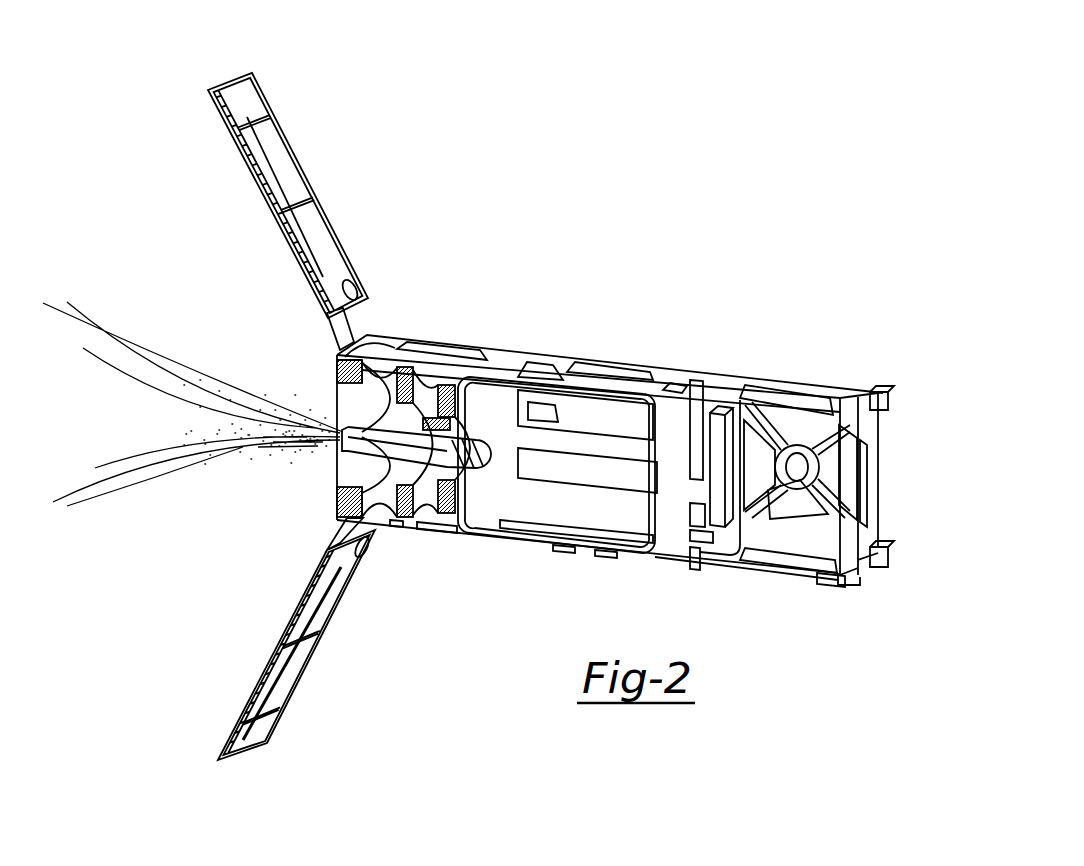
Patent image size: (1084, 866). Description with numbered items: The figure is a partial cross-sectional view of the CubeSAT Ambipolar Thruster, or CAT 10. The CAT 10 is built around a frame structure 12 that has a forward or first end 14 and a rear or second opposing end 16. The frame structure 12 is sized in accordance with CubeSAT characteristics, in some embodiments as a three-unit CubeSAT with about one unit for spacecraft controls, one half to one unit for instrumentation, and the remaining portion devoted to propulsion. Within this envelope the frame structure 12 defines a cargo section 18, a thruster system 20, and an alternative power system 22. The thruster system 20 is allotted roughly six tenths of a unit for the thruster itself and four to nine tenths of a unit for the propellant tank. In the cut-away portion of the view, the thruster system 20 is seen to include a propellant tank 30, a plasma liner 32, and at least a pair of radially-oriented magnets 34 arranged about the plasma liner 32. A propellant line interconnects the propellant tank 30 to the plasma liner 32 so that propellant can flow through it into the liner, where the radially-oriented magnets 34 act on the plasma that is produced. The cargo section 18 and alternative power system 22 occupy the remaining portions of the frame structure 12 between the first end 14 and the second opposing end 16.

The CAT 10 is at (674, 234).
The frame structure 12 is at (877, 472).
The first end 14 is at (822, 585).
The second opposing end 16 is at (372, 334).
The cargo section 18 is at (850, 574).
The thruster system 20 is at (404, 552).
The alternative power system 22 is at (220, 70).
The propellant tank 30 is at (604, 525).
The plasma liner 32 is at (390, 455).
The radially-oriented magnets 34 is at (386, 503).